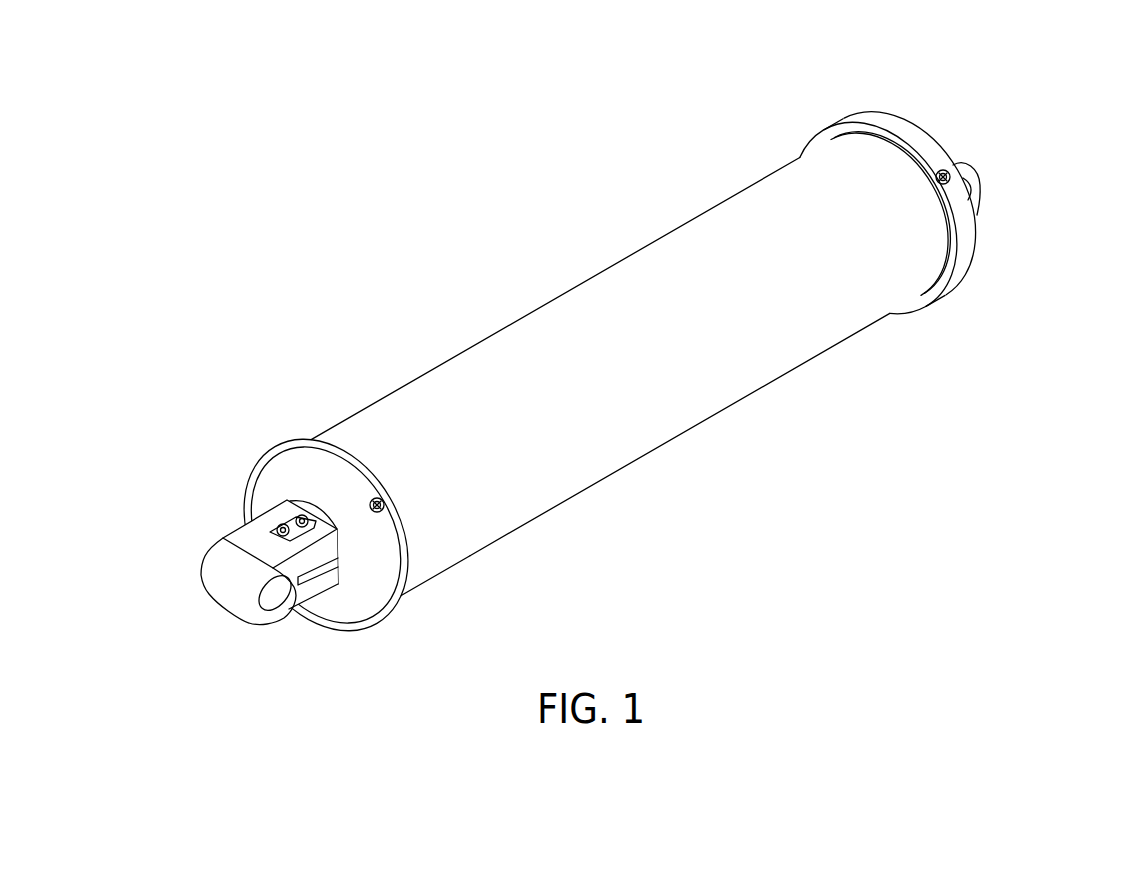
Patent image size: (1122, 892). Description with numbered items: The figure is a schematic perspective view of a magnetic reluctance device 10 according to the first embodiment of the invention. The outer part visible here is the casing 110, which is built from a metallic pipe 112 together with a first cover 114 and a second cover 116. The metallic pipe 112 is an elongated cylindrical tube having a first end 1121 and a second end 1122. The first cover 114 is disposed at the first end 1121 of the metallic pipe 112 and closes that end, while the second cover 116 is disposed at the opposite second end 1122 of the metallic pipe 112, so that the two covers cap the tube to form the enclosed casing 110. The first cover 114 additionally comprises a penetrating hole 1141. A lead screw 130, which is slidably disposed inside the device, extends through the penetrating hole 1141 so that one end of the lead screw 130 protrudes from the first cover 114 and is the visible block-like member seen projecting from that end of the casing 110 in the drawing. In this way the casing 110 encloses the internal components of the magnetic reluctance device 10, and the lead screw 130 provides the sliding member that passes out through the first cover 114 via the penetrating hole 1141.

The magnetic reluctance device 10 is at (127, 120).
The casing 110 is at (664, 182).
The metallic pipe 112 is at (603, 272).
The first cover 114 is at (254, 477).
The second cover 116 is at (876, 115).
The first end 1121 is at (422, 566).
The second end 1122 is at (938, 247).
The penetrating hole 1141 is at (338, 585).
The lead screw 130 is at (204, 584).